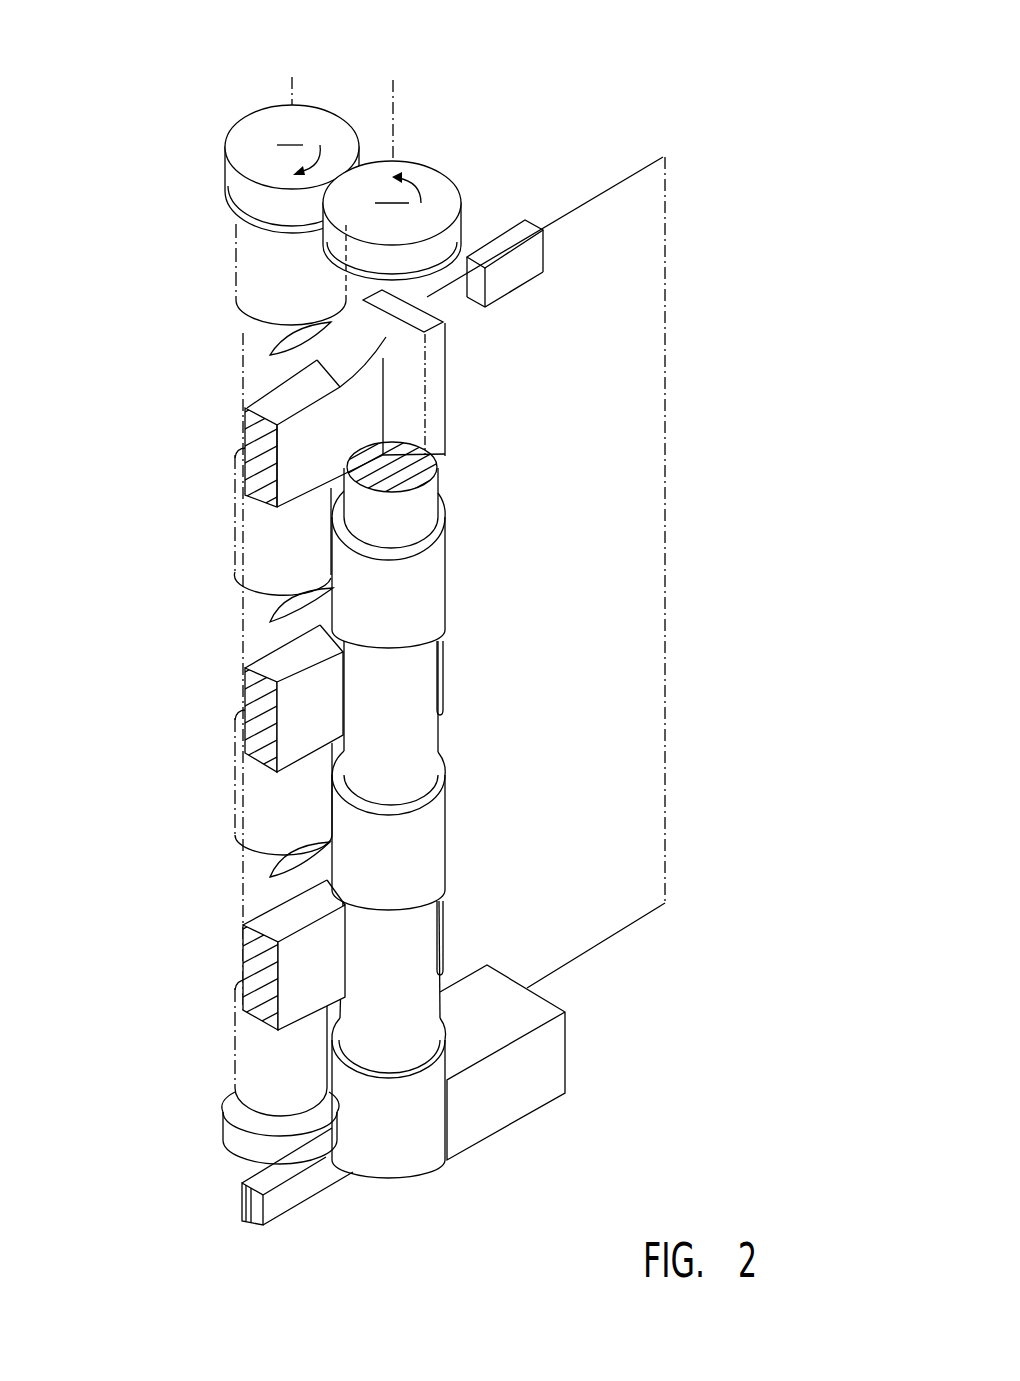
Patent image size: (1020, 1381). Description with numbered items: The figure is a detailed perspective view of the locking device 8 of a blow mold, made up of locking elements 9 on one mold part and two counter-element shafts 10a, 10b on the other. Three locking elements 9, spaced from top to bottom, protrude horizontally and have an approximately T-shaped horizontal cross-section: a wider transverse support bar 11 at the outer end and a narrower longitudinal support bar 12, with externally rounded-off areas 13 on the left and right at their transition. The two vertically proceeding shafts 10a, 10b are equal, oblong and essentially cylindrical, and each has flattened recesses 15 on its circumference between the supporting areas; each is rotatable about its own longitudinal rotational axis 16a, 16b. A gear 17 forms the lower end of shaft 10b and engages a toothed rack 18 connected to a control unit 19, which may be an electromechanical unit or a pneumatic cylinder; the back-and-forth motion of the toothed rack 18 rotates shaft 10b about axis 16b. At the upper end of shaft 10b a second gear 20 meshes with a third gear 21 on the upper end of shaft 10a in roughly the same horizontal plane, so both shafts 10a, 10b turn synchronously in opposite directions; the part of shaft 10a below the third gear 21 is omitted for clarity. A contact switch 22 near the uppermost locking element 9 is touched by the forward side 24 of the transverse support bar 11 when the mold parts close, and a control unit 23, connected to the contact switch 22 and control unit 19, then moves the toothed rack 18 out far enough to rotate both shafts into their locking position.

The locking device 8 is at (410, 1225).
The locking element 9 is at (198, 508).
The shaft 10a is at (393, 732).
The shaft 10b is at (253, 272).
The transverse support bar 11 is at (403, 312).
The longitudinal support bar 12 is at (260, 461).
The externally rounded-off area 13 is at (410, 407).
The recess 15 is at (295, 361).
The rotational axis 16a is at (393, 115).
The rotational axis 16b is at (292, 77).
The gear 17 is at (240, 1140).
The toothed rack 18 is at (292, 1190).
The control unit 19 is at (507, 1087).
The second gear 20 is at (254, 133).
The third gear 21 is at (435, 205).
The contact switch 22 is at (422, 307).
The control unit 23 is at (523, 230).
The forward side 24 is at (456, 378).